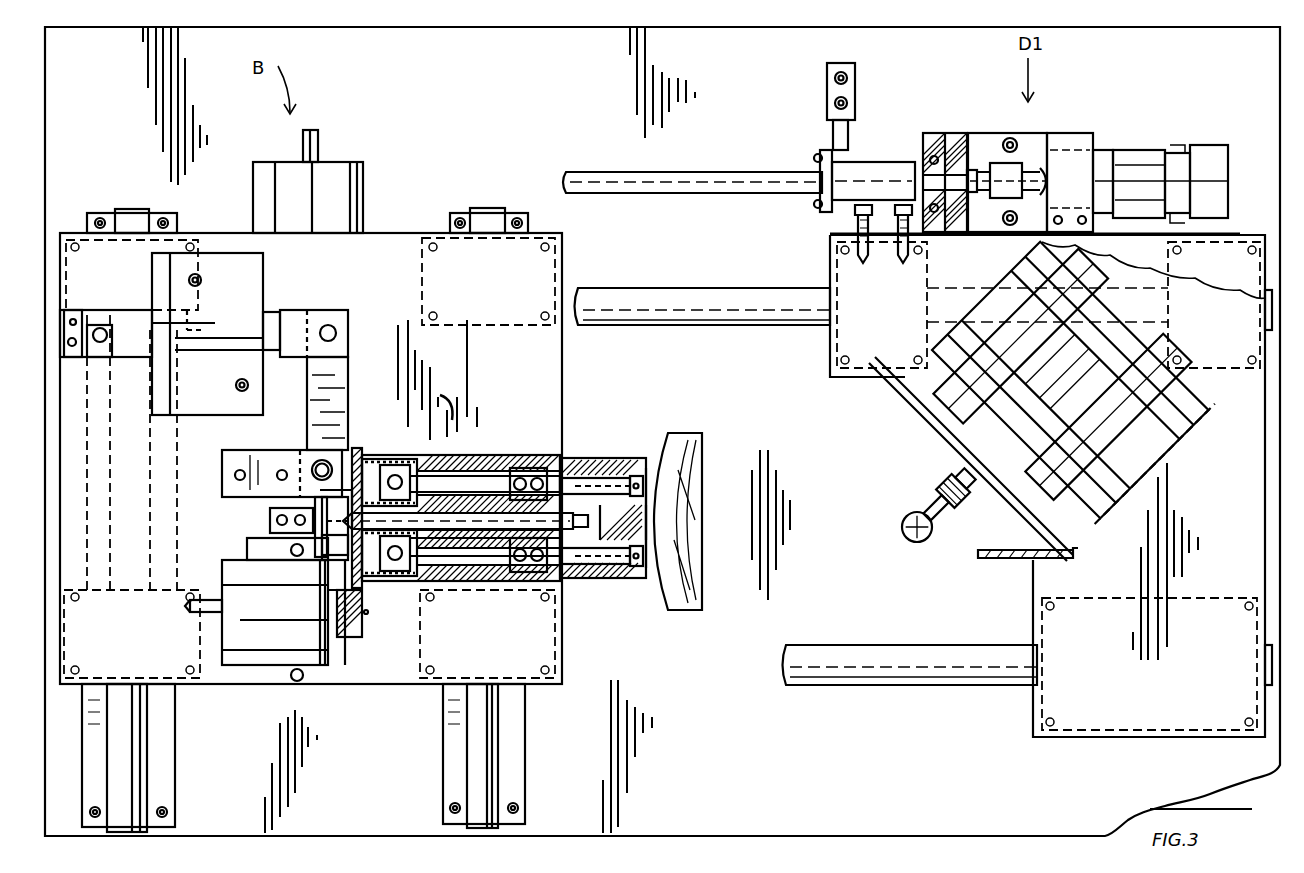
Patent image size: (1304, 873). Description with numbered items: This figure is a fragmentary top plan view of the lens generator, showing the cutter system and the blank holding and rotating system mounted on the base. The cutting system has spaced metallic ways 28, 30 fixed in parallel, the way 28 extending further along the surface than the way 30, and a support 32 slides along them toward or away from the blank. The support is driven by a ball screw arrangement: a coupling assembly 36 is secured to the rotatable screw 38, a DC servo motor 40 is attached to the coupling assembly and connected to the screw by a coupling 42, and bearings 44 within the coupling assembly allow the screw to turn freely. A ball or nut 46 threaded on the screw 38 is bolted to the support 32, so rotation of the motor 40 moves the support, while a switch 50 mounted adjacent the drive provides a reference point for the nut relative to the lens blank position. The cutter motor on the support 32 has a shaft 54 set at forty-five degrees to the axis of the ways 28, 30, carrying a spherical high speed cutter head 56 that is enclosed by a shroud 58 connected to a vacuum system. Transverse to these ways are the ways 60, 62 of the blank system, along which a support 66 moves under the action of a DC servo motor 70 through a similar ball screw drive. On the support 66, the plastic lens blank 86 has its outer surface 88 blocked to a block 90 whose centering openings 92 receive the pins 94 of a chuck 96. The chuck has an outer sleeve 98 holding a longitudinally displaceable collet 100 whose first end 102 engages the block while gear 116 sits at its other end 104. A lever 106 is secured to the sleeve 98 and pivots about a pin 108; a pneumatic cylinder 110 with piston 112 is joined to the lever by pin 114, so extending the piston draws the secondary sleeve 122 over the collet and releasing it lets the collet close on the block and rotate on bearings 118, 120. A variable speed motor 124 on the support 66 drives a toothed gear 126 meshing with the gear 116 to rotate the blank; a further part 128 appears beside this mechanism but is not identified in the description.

The way 28 is at (710, 300).
The way 30 is at (848, 655).
The support 32 is at (1240, 542).
The coupling assembly 36 is at (1043, 135).
The rotatable screw 38 is at (734, 172).
The DC servo motor 40 is at (1143, 152).
The coupling 42 is at (998, 163).
The bearings 44 is at (925, 160).
The ball or nut 46 is at (865, 170).
The switch 50 is at (848, 88).
The shaft 54 is at (975, 482).
The high speed cutter head 56 is at (907, 488).
The shroud 58 is at (1001, 562).
The way 60 is at (135, 763).
The way 62 is at (490, 772).
The support 66 is at (563, 665).
The DC servo motor 70 is at (370, 213).
The plastic lens blank 86 is at (683, 433).
The outer surface 88 is at (700, 455).
The block 90 is at (646, 585).
The centering openings 92 is at (637, 475).
The pins 94 is at (578, 478).
The chuck 96 is at (444, 394).
The outer sleeve 98 is at (517, 455).
The collet 100 is at (600, 465).
The first end 102 is at (572, 521).
The end 104 is at (345, 520).
The lever 106 is at (340, 375).
The pin 108 is at (318, 462).
The pneumatic cylinder 110 is at (262, 270).
The piston 112 is at (275, 312).
The pin 114 is at (330, 330).
The gear 116 is at (356, 448).
The bearing 118 is at (396, 461).
The bearing 120 is at (458, 475).
The secondary sleeve 122 is at (605, 585).
The motor 124 is at (240, 668).
The toothed gear 126 is at (360, 626).
The mounting block 128 is at (295, 505).